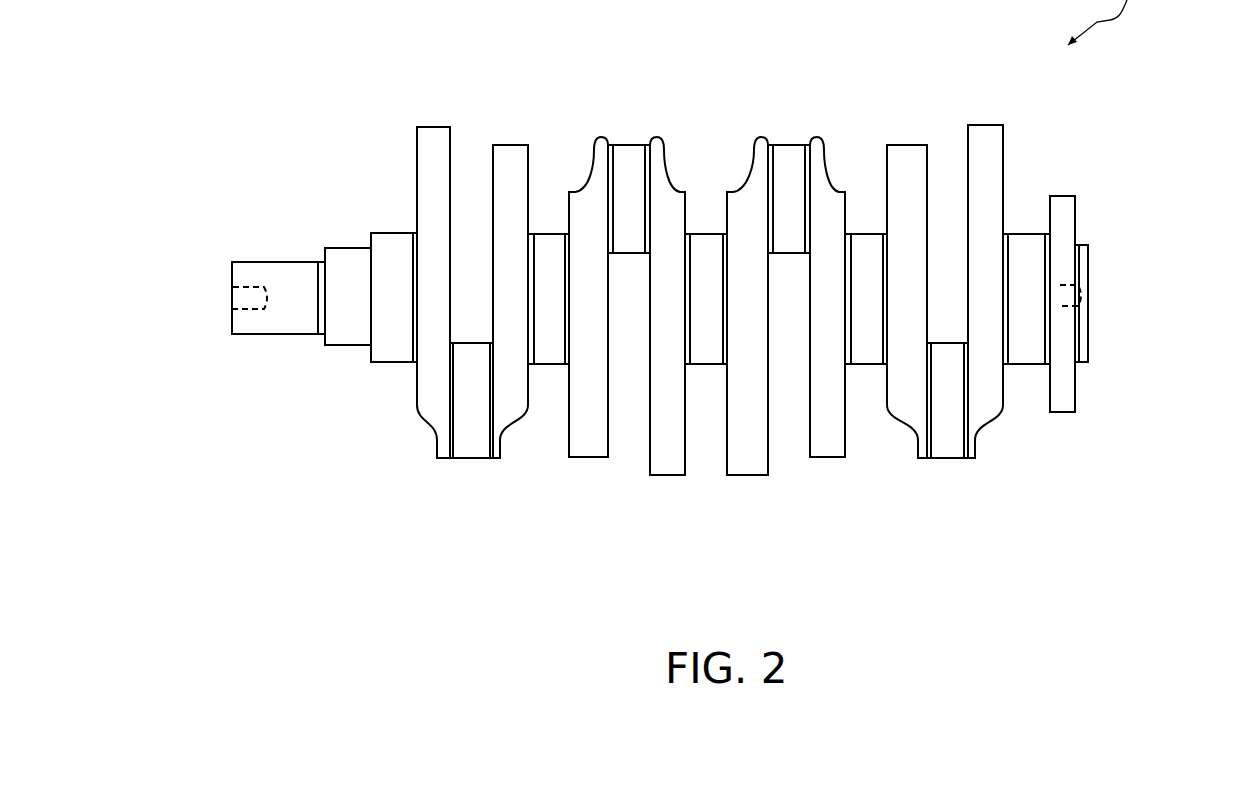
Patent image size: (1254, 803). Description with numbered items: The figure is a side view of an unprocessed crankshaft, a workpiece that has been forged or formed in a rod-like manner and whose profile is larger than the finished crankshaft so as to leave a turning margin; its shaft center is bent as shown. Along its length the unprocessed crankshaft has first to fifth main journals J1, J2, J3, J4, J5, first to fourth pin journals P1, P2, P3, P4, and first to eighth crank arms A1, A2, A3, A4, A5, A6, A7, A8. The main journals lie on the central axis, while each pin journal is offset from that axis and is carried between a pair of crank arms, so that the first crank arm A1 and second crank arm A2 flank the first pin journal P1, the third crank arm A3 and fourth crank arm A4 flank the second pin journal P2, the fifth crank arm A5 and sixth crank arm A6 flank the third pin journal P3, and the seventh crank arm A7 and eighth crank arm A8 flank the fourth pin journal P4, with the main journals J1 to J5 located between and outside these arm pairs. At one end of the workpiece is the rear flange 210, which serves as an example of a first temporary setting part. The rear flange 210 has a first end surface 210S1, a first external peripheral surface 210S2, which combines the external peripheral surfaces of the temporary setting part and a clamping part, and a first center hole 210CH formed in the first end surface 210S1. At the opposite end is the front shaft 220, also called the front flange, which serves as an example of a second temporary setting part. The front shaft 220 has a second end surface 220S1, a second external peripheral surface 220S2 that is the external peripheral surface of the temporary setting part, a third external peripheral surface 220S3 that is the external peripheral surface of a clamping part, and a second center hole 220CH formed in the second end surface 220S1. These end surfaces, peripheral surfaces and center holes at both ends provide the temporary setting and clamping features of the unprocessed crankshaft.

The front shaft 220 is at (367, 210).
The second end surface 220S1 is at (228, 271).
The second external peripheral surface 220S2 is at (266, 338).
The third external peripheral surface 220S3 is at (350, 350).
The second center hole 220CH is at (248, 298).
The rear flange 210 is at (1083, 186).
The first end surface 210S1 is at (1077, 226).
The first external peripheral surface 210S2 is at (1062, 416).
The first center hole 210CH is at (1068, 296).
The first crank arm A1 is at (433, 143).
The second crank arm A2 is at (510, 163).
The third crank arm A3 is at (591, 445).
The fourth crank arm A4 is at (668, 462).
The fifth crank arm A5 is at (751, 462).
The sixth crank arm A6 is at (831, 442).
The seventh crank arm A7 is at (905, 158).
The eighth crank arm A8 is at (987, 140).
The first pin journal P1 is at (472, 445).
The second pin journal P2 is at (627, 157).
The third pin journal P3 is at (787, 157).
The fourth pin journal P4 is at (947, 440).
The first main journal J1 is at (395, 352).
The second main journal J2 is at (550, 352).
The third main journal J3 is at (712, 358).
The fourth main journal J4 is at (867, 353).
The fifth main journal J5 is at (1030, 345).